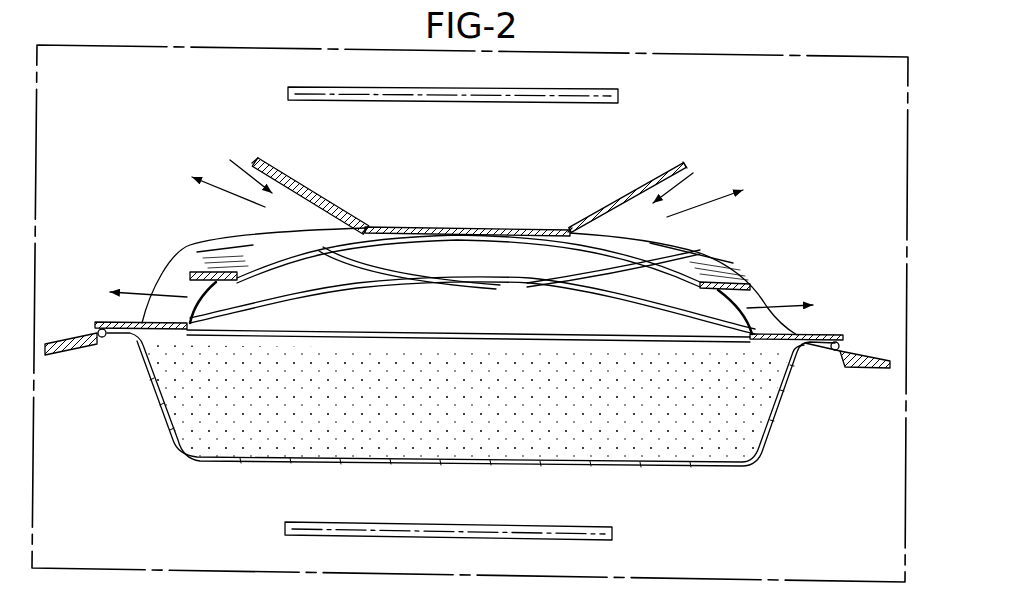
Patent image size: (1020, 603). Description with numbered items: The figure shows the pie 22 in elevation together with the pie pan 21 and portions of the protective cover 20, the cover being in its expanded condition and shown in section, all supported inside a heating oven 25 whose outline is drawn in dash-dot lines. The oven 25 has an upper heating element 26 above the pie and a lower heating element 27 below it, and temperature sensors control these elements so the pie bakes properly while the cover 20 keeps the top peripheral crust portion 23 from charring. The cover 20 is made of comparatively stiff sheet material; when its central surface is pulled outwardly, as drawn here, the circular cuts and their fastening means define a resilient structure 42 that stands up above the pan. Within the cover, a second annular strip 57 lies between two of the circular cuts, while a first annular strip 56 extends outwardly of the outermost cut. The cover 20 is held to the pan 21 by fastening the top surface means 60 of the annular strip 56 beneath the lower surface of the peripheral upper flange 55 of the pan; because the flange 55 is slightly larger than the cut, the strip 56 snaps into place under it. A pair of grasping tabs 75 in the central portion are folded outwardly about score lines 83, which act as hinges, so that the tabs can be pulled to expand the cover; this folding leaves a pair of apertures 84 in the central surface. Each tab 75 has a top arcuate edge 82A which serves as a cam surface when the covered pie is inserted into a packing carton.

The protective cover means 20 is at (595, 188).
The pie pan 21 is at (772, 425).
The pie 22 is at (700, 440).
The top peripheral crust portion 23 is at (798, 322).
The heating oven 25 is at (700, 51).
The upper heating element 26 is at (620, 93).
The lower heating element 27 is at (574, 541).
The resilient structure 42 is at (750, 232).
The peripheral upper flange 55 is at (110, 340).
The first annular strip 56 is at (857, 367).
The second annular strip 57 is at (758, 300).
The top surface means 60 is at (830, 362).
The grasping tab 75 is at (291, 182).
The top arcuate edge 82A is at (256, 160).
The score line 83 is at (367, 230).
The apertures 84 is at (467, 172).